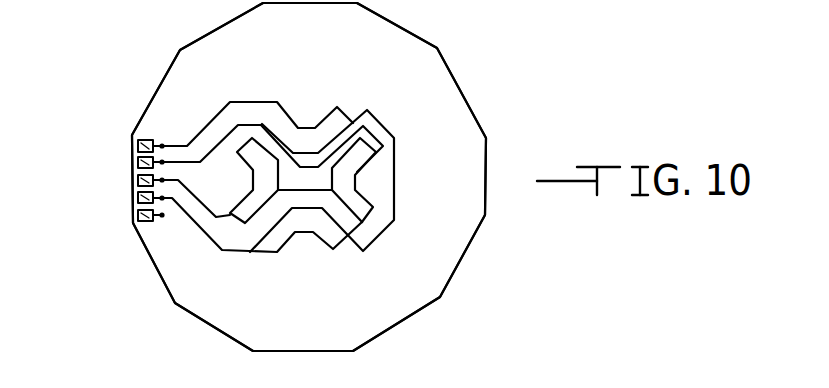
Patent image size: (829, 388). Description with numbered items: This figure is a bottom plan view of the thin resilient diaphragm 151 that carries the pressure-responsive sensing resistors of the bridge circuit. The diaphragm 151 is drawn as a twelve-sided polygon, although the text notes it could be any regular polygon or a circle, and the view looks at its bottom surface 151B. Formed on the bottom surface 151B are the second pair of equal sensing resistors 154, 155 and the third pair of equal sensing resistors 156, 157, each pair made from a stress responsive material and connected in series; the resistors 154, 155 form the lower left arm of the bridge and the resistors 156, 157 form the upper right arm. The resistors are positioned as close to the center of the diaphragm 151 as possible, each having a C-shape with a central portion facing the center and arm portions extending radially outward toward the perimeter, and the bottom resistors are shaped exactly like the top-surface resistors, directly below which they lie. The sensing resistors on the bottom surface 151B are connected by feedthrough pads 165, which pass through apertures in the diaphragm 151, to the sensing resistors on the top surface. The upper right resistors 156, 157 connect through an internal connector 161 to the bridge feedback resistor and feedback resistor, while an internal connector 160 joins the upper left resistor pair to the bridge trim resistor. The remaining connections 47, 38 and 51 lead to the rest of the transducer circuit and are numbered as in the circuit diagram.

The diaphragm 151 is at (421, 86).
The bottom surface 151B is at (470, 138).
The internal connector 161 is at (134, 138).
The bonding pad 47 is at (134, 163).
The bonding pad 38 is at (131, 183).
The bonding pad 51 is at (133, 204).
The internal connector 160 is at (132, 222).
The feedthrough pads 165 is at (162, 143).
The sensing resistor 156 is at (307, 138).
The sensing resistor 157 is at (302, 222).
The sensing resistor 154 is at (346, 184).
The sensing resistor 155 is at (264, 178).